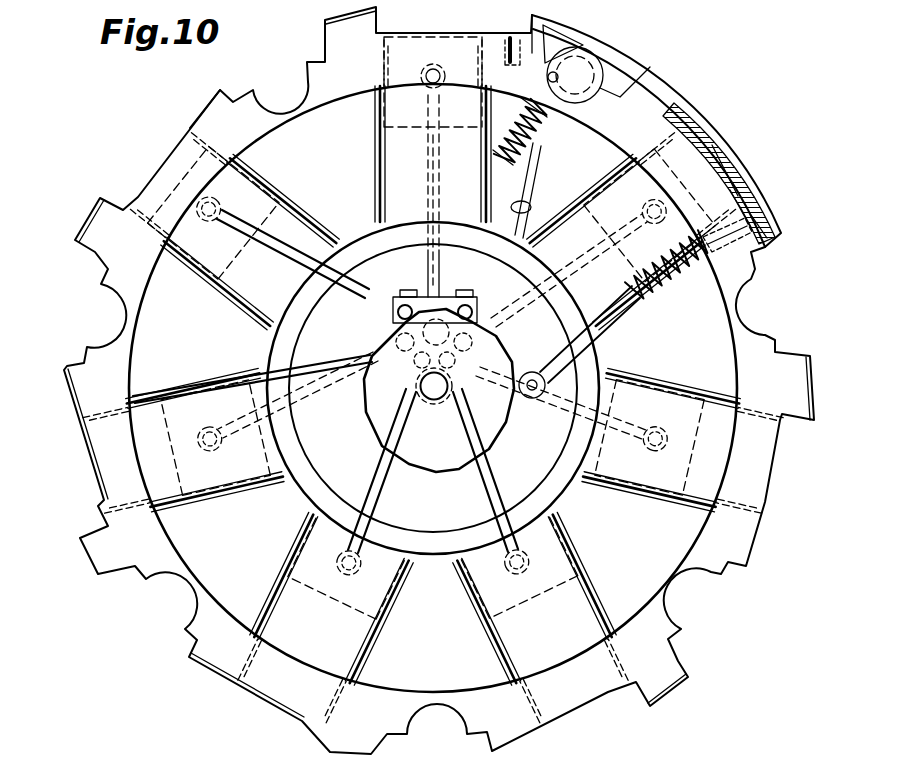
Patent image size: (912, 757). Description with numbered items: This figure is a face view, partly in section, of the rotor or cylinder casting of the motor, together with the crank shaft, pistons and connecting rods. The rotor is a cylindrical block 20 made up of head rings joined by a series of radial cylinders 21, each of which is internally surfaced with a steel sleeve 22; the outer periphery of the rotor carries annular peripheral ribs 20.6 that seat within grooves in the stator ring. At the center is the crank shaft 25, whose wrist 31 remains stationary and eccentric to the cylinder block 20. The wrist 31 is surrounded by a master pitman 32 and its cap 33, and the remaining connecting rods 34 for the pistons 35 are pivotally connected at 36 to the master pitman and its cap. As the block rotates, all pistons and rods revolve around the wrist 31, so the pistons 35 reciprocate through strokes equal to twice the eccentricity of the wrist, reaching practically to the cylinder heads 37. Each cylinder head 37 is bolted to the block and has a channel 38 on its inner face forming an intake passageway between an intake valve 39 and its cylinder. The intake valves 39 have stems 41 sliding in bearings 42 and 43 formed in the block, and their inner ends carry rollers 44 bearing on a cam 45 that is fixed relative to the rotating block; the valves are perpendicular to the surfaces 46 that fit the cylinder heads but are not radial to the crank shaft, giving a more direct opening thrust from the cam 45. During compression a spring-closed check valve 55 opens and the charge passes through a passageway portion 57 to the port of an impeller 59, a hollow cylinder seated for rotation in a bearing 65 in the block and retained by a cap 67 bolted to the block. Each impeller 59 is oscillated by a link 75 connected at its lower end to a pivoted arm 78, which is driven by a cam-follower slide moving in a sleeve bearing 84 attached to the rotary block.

The cylindrical block 20 is at (318, 83).
The annular peripheral ribs 20.6 is at (661, 77).
The radial cylinders 21 is at (376, 198).
The steel sleeves 22 is at (386, 54).
The crank shaft 25 is at (432, 402).
The wrist 31 is at (395, 322).
The master pitman 32 is at (415, 290).
The cap 33 is at (397, 355).
The connecting rods 34 is at (370, 345).
The pistons 35 is at (436, 34).
The pivotal connection 36 is at (448, 297).
The cylinder heads 37 is at (706, 130).
The channel 38 is at (744, 168).
The intake valve 39 is at (770, 201).
The valve stems 41 is at (648, 305).
The bearing 42 is at (722, 247).
The bearing 43 is at (615, 355).
The rollers 44 is at (532, 398).
The cam 45 is at (437, 470).
The surfaces 46 is at (411, 30).
The check valve 55 is at (490, 62).
The portion of passageway 57 is at (578, 36).
The impeller 59 is at (593, 98).
The bearing 65 is at (744, 305).
The cap 67 is at (618, 52).
The link 75 is at (543, 122).
The arm 78 is at (530, 180).
The sleeve bearing 84 is at (452, 206).